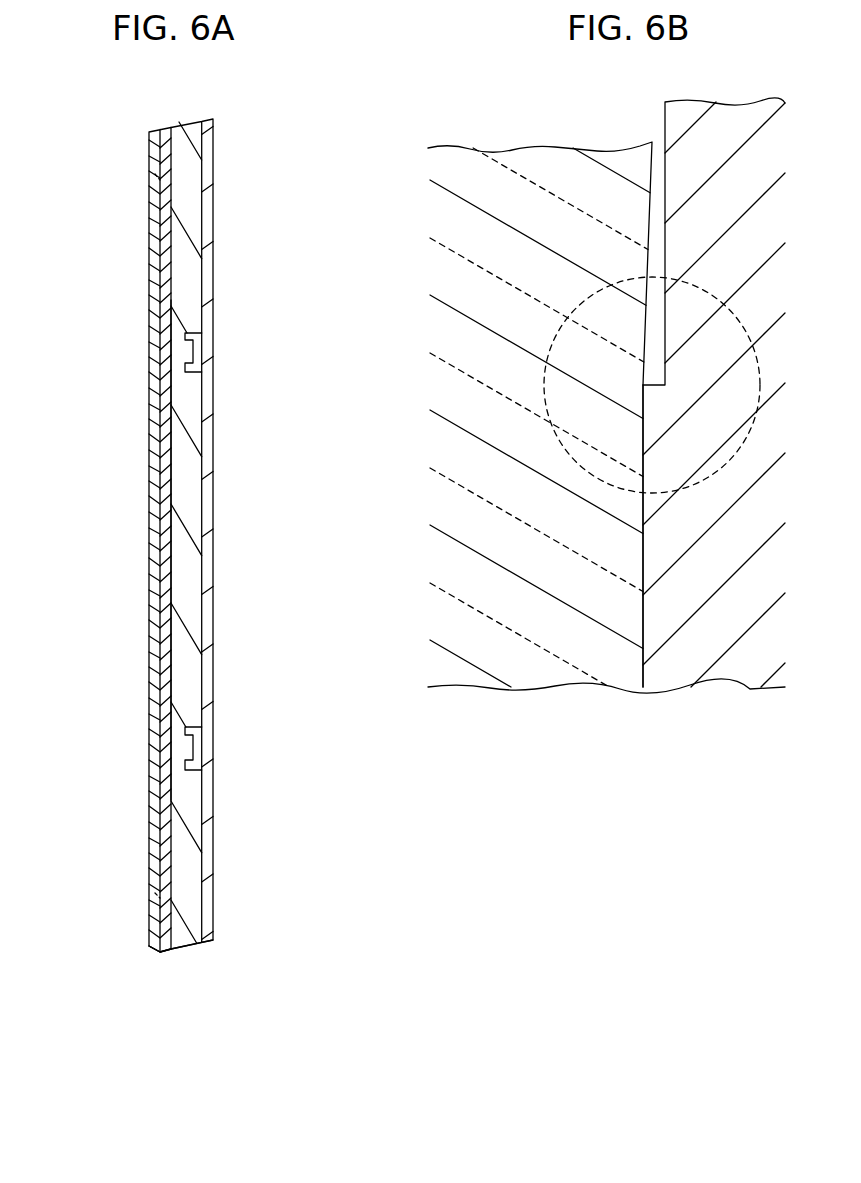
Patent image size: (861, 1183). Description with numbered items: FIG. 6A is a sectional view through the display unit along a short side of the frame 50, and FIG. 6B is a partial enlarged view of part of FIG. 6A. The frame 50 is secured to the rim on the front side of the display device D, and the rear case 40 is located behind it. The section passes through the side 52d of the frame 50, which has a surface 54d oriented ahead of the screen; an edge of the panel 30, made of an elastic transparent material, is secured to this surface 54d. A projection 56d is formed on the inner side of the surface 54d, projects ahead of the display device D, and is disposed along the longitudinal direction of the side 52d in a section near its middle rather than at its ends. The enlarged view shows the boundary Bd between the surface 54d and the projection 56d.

In FIG. 6A, the panel 30 is at (146, 595).
In FIG. 6B, the panel 30 is at (428, 384).
In FIG. 6A, the rear case 40 is at (213, 458).
In FIG. 6A, the frame 50 is at (160, 958).
In FIG. 6B, the frame 50 is at (735, 672).
In FIG. 6A, the side 52d is at (172, 812).
In FIG. 6A, the surface 54d is at (150, 938).
In FIG. 6A, the projection 56d is at (157, 764).
In FIG. 6B, the projection 56d is at (652, 550).
In FIG. 6A, the display device D is at (183, 657).
In FIG. 6A, the boundary Bd is at (157, 176).
In FIG. 6B, the boundary Bd is at (580, 308).